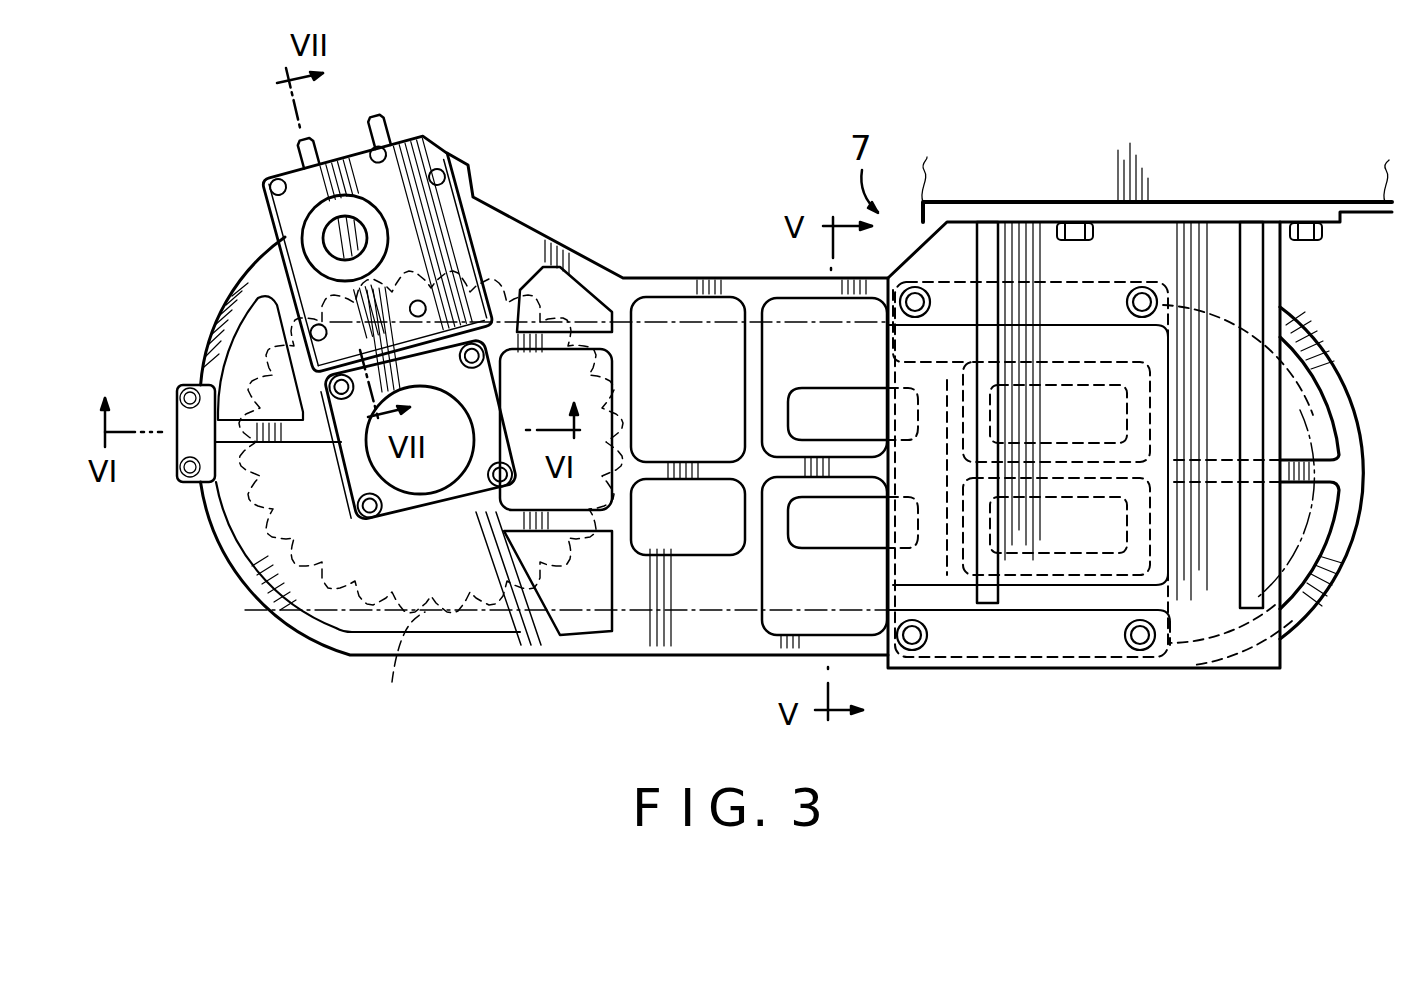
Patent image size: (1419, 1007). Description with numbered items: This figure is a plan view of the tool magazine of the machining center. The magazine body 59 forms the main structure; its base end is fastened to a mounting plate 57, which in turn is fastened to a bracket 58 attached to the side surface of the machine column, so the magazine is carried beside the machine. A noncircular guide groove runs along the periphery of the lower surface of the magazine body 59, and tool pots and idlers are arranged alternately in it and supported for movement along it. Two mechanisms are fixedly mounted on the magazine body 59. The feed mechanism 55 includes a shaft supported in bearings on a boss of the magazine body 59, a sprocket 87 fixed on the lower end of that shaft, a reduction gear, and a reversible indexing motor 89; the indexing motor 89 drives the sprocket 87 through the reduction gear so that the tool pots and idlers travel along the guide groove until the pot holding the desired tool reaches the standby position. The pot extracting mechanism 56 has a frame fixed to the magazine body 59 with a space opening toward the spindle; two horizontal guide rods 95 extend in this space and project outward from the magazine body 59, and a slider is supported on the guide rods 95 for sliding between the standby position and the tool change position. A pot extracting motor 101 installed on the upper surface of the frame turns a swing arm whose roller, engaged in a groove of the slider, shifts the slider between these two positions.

The feed mechanism 55 is at (393, 510).
The pot extracting mechanism 56 is at (423, 128).
The mounting plate 57 is at (1223, 373).
The bracket 58 is at (992, 230).
The magazine body 59 is at (1356, 408).
The sprocket 87 is at (396, 665).
The indexing motor 89 is at (421, 494).
The guide rods 95 is at (380, 120).
The pot extracting motor 101 is at (300, 240).